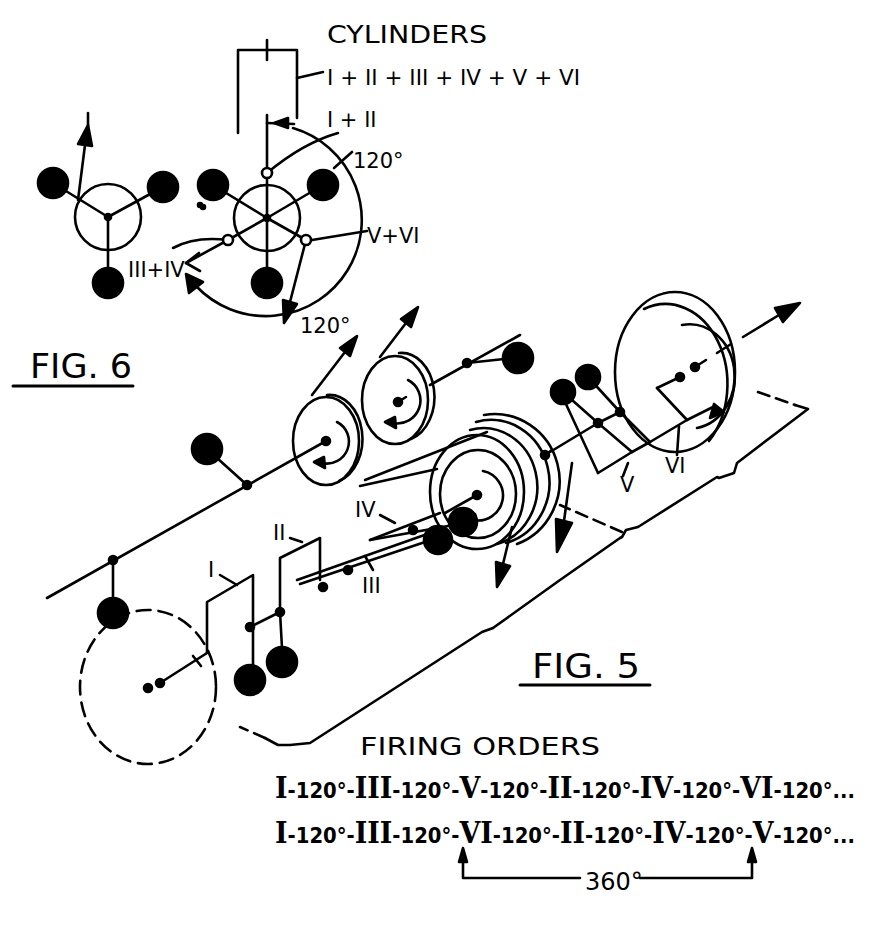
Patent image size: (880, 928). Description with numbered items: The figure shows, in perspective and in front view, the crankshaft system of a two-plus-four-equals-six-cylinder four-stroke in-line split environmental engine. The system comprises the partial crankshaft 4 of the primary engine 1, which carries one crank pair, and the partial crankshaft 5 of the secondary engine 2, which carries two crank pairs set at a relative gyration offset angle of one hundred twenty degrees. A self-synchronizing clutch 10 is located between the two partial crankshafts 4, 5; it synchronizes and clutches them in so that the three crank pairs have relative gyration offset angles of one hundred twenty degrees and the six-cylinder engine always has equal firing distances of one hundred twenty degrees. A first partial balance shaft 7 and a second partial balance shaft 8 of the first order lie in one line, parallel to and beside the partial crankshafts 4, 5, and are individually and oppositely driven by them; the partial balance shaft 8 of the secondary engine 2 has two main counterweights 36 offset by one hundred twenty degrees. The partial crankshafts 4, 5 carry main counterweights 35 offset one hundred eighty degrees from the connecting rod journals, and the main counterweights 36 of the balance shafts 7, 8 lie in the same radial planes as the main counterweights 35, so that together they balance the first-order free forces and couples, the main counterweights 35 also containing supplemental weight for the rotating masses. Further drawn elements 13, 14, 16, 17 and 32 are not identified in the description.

In FIG. 5, the primary engine 1 is at (650, 510).
In FIG. 5, the secondary engine 2 is at (377, 686).
In FIG. 6, the partial crankshaft 4 is at (264, 200).
In FIG. 5, the partial crankshaft 4 is at (657, 386).
In FIG. 6, the partial crankshaft 5 is at (249, 250).
In FIG. 5, the partial crankshaft 5 is at (173, 672).
In FIG. 6, the first partial balance shaft 7 is at (255, 192).
In FIG. 5, the first partial balance shaft 7 is at (445, 376).
In FIG. 6, the second partial balance shaft 8 is at (79, 249).
In FIG. 5, the second partial balance shaft 8 is at (157, 537).
In FIG. 5, the self-synchronizing clutch 10 is at (480, 420).
In FIG. 6, the balance shaft pulley 13 is at (202, 208).
In FIG. 5, the balance shaft pulley 13 is at (390, 337).
In FIG. 6, the balance shaft pulley 14 is at (195, 167).
In FIG. 5, the balance shaft pulley 14 is at (325, 368).
In FIG. 5, the flywheel pulley 16 is at (692, 302).
In FIG. 5, the balance shaft circle 17 is at (118, 740).
In FIG. 5, the output shaft 32 is at (758, 328).
In FIG. 6, the main counterweights 35 is at (222, 178).
In FIG. 5, the main counterweights 35 is at (447, 533).
In FIG. 6, the main counterweights 36 is at (50, 168).
In FIG. 5, the main counterweights 36 is at (125, 604).